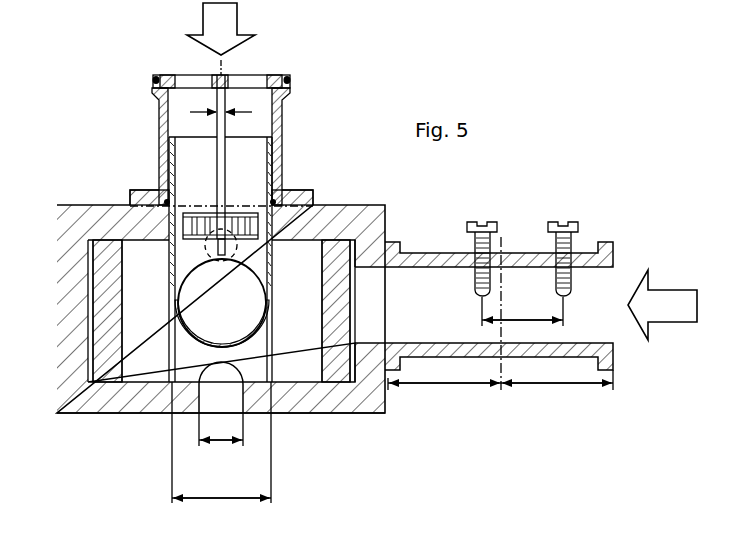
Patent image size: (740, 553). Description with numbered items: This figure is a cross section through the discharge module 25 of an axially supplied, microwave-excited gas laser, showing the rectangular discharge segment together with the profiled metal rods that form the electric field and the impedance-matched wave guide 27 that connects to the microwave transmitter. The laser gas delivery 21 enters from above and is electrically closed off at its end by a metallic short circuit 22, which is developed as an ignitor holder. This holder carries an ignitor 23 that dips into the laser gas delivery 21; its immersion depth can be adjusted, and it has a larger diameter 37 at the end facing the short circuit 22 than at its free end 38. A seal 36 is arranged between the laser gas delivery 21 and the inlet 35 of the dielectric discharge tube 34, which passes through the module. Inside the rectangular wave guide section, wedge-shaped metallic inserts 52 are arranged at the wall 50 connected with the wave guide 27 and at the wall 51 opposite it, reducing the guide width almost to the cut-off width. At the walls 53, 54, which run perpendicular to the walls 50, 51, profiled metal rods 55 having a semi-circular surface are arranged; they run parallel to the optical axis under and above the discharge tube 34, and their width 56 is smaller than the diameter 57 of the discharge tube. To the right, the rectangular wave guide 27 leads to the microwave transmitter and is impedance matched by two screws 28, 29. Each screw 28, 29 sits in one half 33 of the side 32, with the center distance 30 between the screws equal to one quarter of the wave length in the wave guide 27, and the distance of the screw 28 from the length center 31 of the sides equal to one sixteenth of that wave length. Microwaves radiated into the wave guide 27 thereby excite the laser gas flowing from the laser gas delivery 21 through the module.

The laser gas delivery 21 is at (150, 92).
The metallic short circuit 22 is at (256, 80).
The ignitor 23 is at (217, 128).
The discharge module 25 is at (317, 198).
The wave guide 27 is at (523, 253).
The screw 28 is at (475, 220).
The screw 29 is at (562, 220).
The center distance 30 is at (520, 318).
The length center 31 is at (493, 338).
The side 32 is at (438, 253).
The half 33 is at (437, 385).
The discharge tube 34 is at (272, 308).
The inlet 35 is at (282, 140).
The seal 36 is at (283, 190).
The large diameter 37 is at (217, 110).
The free end 38 is at (218, 252).
The wall 50 is at (387, 215).
The wall 51 is at (73, 297).
The wedge-shaped metallic insert 52 is at (328, 338).
The wall 53 is at (105, 203).
The wall 54 is at (132, 410).
The profiled metal rod 55 is at (213, 372).
The width 56 is at (219, 443).
The diameter 57 is at (219, 500).